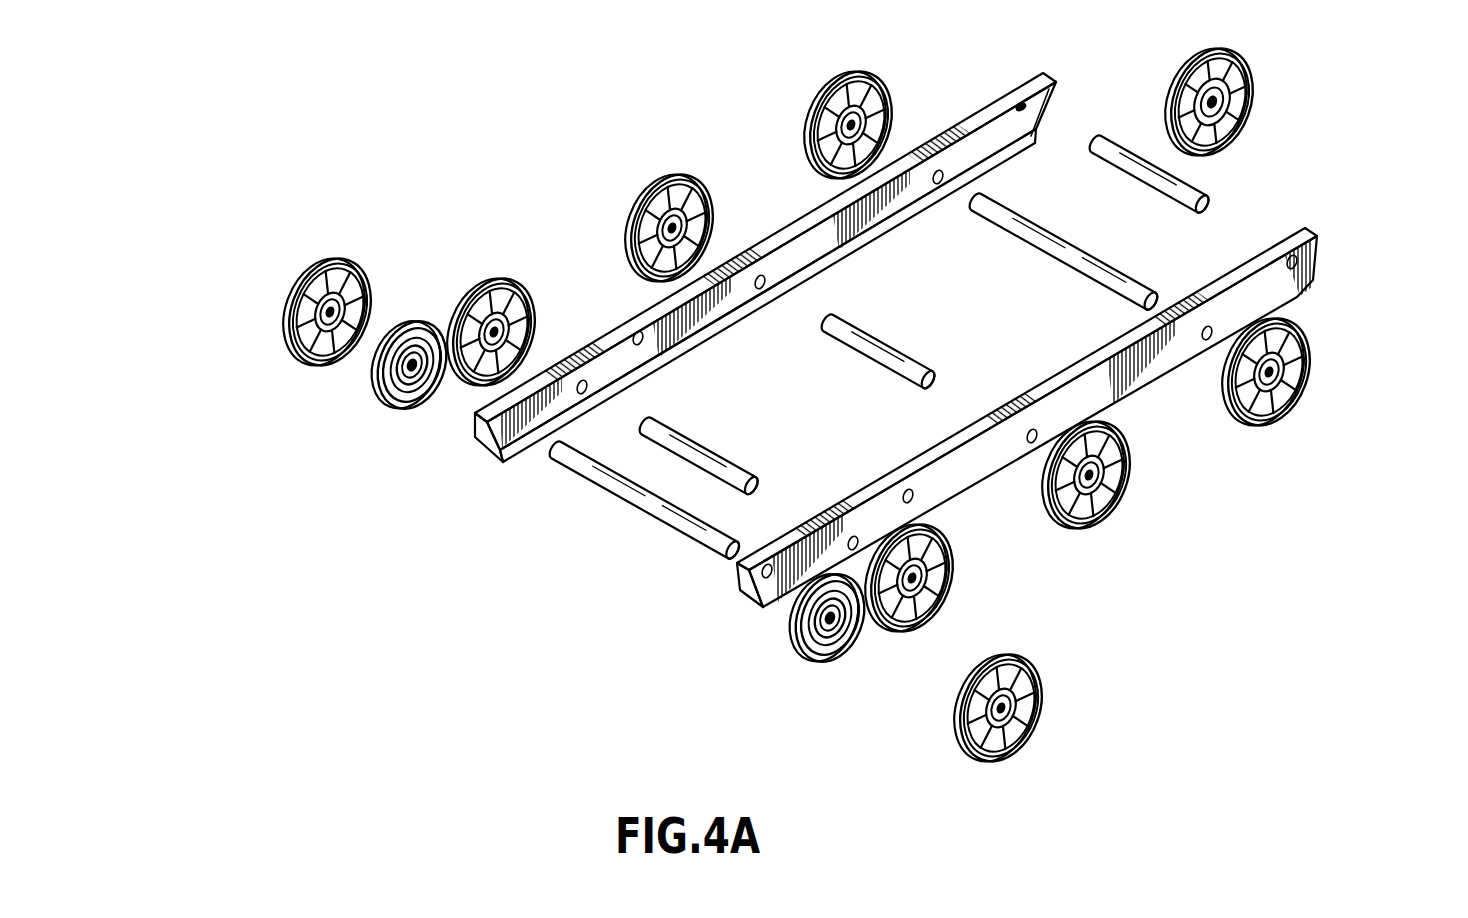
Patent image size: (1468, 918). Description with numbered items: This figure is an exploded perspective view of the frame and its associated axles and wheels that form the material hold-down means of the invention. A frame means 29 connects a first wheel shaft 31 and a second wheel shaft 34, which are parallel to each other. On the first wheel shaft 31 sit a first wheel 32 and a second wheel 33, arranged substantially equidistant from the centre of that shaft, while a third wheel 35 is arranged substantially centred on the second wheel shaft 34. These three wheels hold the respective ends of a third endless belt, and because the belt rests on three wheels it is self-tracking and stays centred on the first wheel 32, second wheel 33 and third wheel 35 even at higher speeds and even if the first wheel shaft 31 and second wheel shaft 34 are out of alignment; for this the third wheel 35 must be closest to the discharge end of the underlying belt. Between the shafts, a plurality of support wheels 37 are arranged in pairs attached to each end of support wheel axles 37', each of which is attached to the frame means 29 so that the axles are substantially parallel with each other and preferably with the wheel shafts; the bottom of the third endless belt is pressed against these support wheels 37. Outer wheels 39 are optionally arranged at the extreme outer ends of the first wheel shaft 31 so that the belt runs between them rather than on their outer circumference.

The frame means 29 is at (1030, 77).
The first wheel shaft 31 is at (656, 510).
The first wheel 32 is at (810, 655).
The second wheel 33 is at (397, 400).
The second wheel shaft 34 is at (1207, 200).
The third wheel 35 is at (1246, 66).
The support wheels 37 is at (923, 348).
The support wheel axles 37' is at (929, 363).
The outer wheels 39 is at (288, 340).